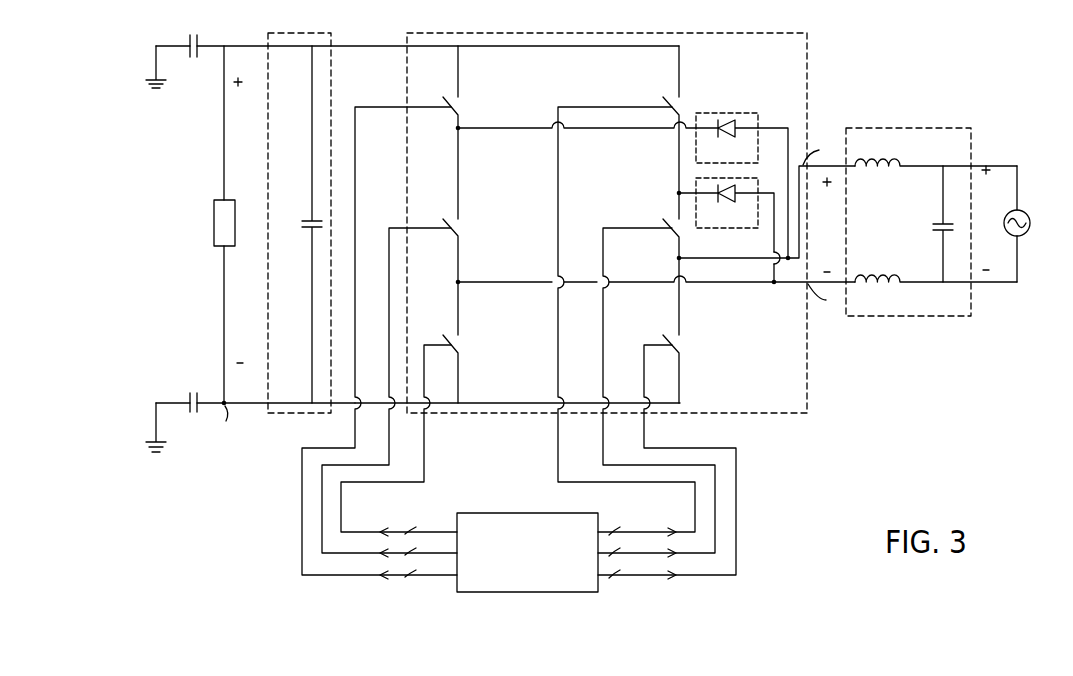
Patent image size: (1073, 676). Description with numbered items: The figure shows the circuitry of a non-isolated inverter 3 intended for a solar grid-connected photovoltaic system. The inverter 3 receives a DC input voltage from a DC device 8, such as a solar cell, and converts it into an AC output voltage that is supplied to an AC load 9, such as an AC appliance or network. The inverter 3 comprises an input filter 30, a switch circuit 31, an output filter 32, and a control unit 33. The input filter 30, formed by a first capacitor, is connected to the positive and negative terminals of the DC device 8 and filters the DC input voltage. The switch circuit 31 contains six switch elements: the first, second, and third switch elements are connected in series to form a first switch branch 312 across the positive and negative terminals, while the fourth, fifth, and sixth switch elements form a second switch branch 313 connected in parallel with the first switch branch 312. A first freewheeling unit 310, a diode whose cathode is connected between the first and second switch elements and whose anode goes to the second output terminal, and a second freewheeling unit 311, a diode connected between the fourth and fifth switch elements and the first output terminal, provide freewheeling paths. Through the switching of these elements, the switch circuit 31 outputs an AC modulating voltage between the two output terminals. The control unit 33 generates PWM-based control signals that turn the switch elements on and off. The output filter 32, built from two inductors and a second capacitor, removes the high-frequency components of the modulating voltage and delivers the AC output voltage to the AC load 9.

The inverter 3 is at (982, 77).
The DC device 8 is at (213, 227).
The AC load 9 is at (1021, 211).
The input filter 30 is at (268, 36).
The switch circuit 31 is at (408, 36).
The output filter 32 is at (913, 128).
The control unit 33 is at (520, 513).
The first freewheeling unit 310 is at (730, 229).
The second freewheeling unit 311 is at (748, 113).
The first switch branch 312 is at (633, 93).
The second switch branch 313 is at (396, 95).